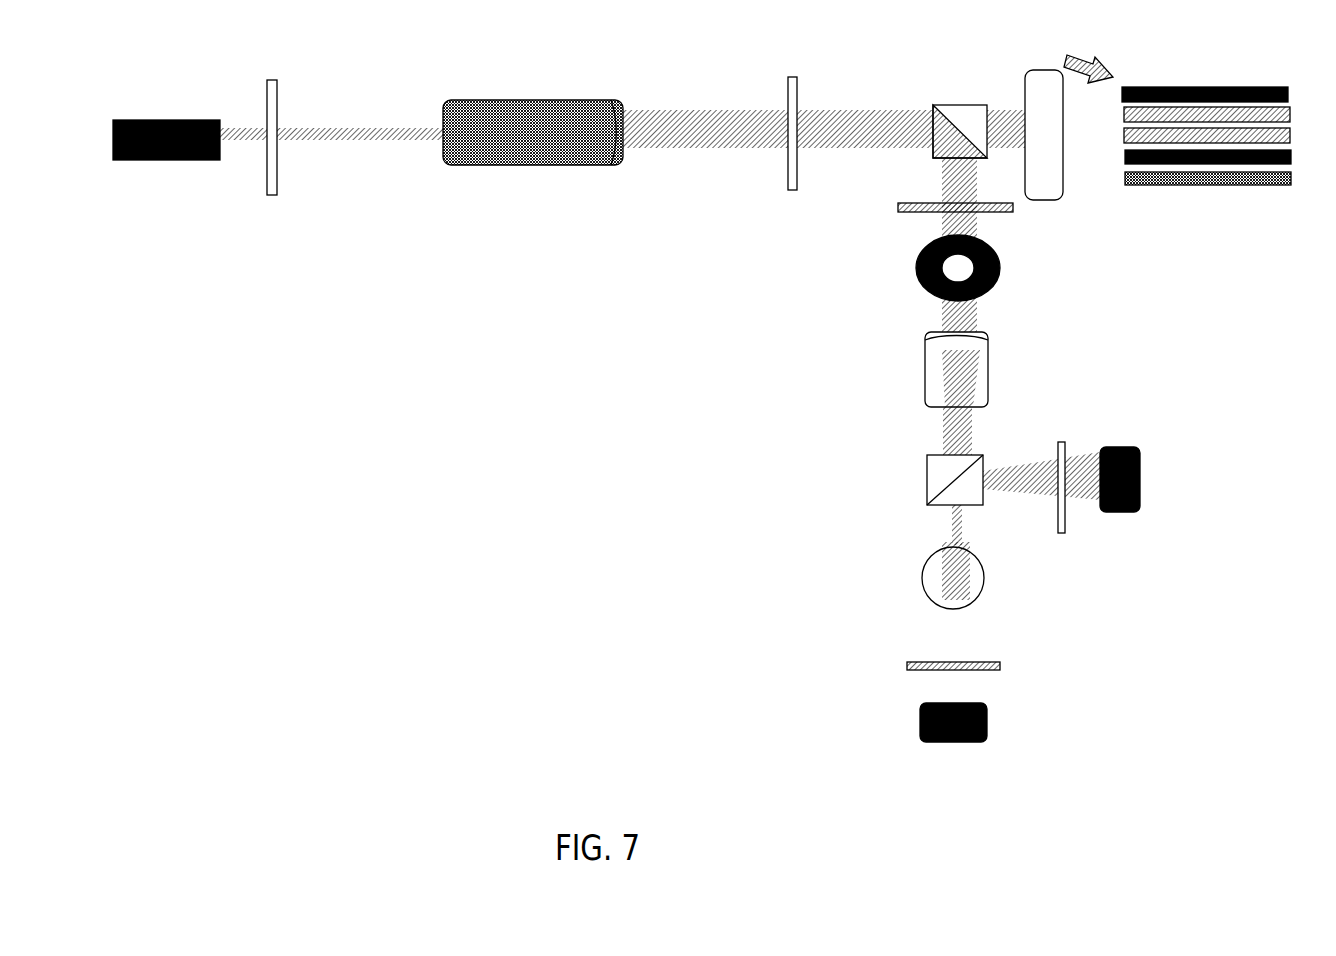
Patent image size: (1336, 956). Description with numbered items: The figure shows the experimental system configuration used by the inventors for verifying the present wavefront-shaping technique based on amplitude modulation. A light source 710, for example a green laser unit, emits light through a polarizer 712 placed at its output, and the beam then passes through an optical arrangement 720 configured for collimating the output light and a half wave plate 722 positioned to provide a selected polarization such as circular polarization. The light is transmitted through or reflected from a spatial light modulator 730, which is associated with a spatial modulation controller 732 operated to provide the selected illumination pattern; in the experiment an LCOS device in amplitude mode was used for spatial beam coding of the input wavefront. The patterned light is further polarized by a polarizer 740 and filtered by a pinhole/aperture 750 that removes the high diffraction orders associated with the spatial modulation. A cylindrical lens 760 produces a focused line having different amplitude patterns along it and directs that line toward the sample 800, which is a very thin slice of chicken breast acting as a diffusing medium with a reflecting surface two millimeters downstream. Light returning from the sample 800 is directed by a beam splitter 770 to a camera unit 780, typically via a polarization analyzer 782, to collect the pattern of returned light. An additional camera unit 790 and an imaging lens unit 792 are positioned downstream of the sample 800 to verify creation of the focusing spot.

The light source 710 is at (185, 120).
The polarizer 712 is at (269, 80).
The optical arrangement 720 is at (498, 100).
The half wave plate 722 is at (791, 77).
The spatial light modulator 730 is at (953, 105).
The spatial modulation controller 732 is at (1048, 70).
The polarizer 740 is at (997, 212).
The pinhole/aperture 750 is at (920, 283).
The cylindrical lens 760 is at (931, 369).
The beam splitter 770 is at (927, 472).
The camera unit 780 is at (1140, 455).
The polarization analyzer 782 is at (1060, 442).
The additional camera unit 790 is at (920, 728).
The imaging lens unit 792 is at (907, 668).
The sample 800 is at (920, 560).